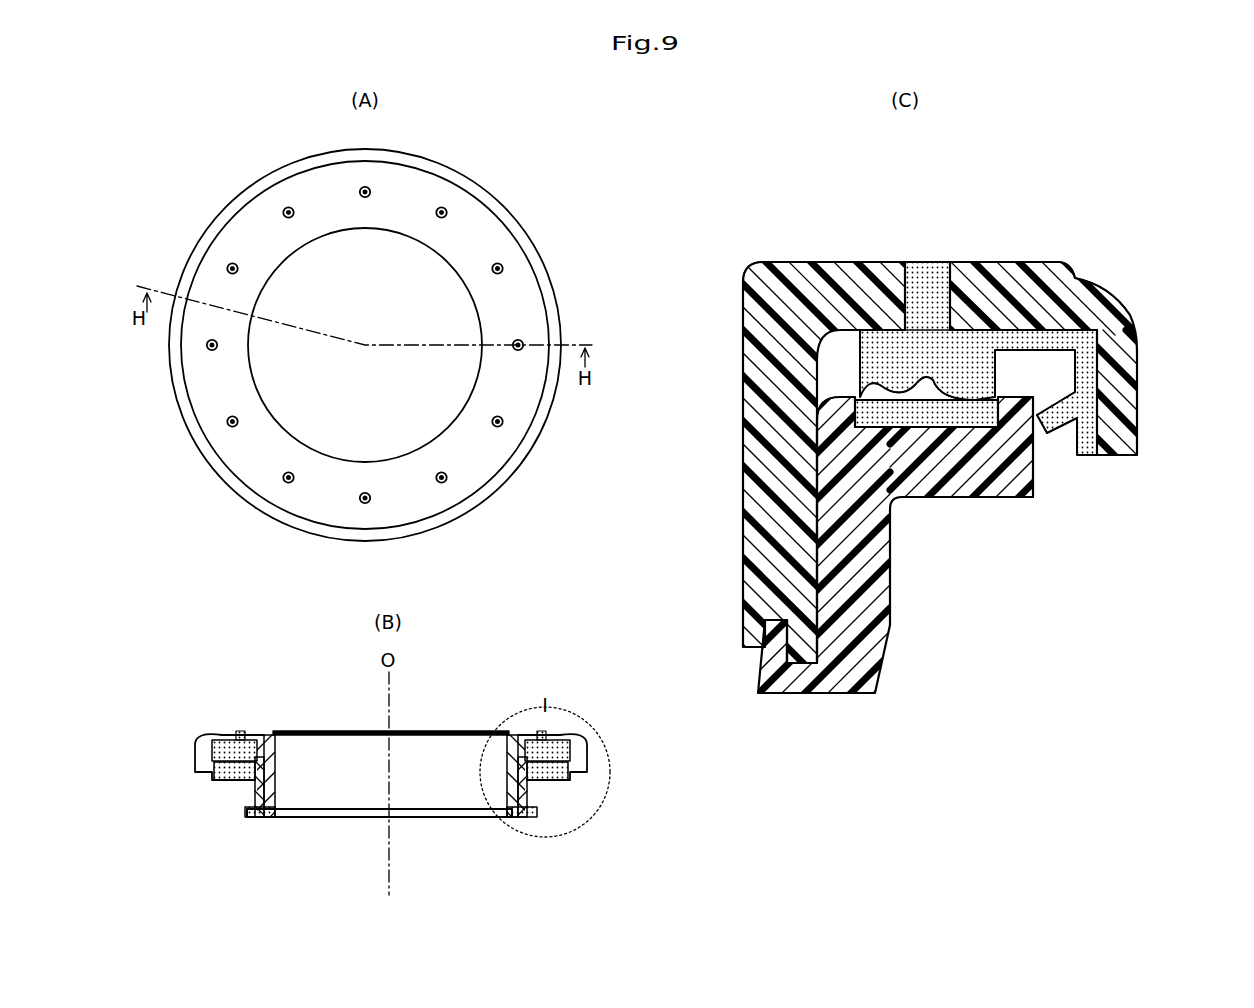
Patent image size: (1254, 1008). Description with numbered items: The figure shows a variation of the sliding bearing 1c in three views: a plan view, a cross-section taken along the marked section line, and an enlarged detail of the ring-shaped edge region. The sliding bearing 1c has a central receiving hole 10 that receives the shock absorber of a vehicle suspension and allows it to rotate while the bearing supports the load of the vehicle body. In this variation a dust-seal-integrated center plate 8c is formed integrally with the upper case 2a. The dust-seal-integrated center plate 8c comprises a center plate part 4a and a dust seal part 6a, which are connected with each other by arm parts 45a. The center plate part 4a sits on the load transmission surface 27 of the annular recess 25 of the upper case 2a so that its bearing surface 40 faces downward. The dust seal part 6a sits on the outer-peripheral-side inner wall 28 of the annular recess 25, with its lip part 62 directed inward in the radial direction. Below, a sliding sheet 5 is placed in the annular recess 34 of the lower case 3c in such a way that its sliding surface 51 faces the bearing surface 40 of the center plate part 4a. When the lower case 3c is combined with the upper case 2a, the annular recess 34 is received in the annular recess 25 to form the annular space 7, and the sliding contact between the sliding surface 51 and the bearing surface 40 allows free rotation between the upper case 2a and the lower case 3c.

The sliding bearing 1c is at (562, 132).
The upper case 2a is at (410, 196).
The receiving hole 10 is at (440, 312).
The lower case 3c is at (378, 818).
The annular space 7 is at (200, 752).
The dust seal part 6a is at (210, 770).
The center plate part 4a is at (235, 778).
The sliding sheet 5 is at (230, 790).
The dust-seal-integrated center plate 8c is at (555, 745).
The annular recess 34 is at (893, 332).
The load transmission surface 27 is at (913, 411).
The bearing surface 40 is at (995, 350).
The outer-peripheral-side inner wall 28 is at (1098, 378).
The lip part 62 is at (1047, 432).
The arm parts 45a is at (1016, 352).
The annular recess 25 is at (928, 390).
The sliding surface 51 is at (878, 398).